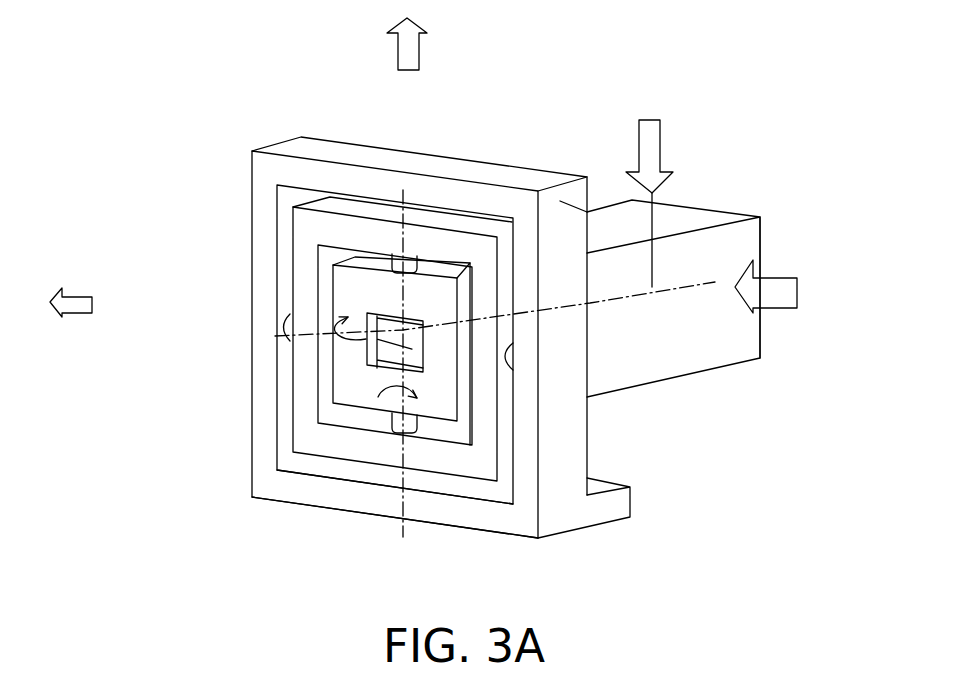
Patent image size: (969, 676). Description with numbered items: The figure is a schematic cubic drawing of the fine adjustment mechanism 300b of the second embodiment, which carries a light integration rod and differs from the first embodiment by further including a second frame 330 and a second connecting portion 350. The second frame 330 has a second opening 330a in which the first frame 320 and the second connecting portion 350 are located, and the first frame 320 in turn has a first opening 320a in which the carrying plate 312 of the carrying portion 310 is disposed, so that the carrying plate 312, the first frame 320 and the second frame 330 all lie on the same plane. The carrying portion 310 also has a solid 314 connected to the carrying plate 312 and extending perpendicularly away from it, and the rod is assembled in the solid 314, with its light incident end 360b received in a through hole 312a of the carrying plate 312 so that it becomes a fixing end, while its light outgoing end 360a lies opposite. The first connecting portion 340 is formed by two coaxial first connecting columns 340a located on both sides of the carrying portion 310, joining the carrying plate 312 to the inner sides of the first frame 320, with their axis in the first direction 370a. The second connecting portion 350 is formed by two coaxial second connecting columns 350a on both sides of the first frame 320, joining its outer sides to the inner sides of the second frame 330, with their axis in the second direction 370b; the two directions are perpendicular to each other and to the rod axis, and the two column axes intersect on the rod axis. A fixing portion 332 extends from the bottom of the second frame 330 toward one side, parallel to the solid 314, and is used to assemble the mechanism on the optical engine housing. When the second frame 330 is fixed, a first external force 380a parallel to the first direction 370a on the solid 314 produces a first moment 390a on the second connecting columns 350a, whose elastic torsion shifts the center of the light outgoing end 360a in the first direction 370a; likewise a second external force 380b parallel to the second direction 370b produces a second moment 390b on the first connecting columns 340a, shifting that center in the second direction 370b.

The fine adjustment mechanism 300b is at (792, 623).
The carrying portion 310 is at (485, 359).
The carrying plate 312 is at (398, 388).
The through hole 312a is at (257, 416).
The solid 314 is at (719, 330).
The first frame 320 is at (338, 280).
The first opening 320a is at (323, 292).
The second frame 330 is at (386, 340).
The second opening 330a is at (283, 231).
The fixing portion 332 is at (370, 505).
The first connecting portion 340 is at (440, 338).
The first connecting columns 340a is at (398, 262).
The second connecting portion 350 is at (495, 331).
The second connecting columns 350a is at (285, 337).
The light outgoing end 360a is at (776, 227).
The light incident end 360b is at (364, 363).
The first direction 370a is at (422, 48).
The second direction 370b is at (78, 292).
The first external force 380a is at (653, 142).
The second external force 380b is at (797, 293).
The first moment 390a is at (328, 342).
The second moment 390b is at (363, 397).